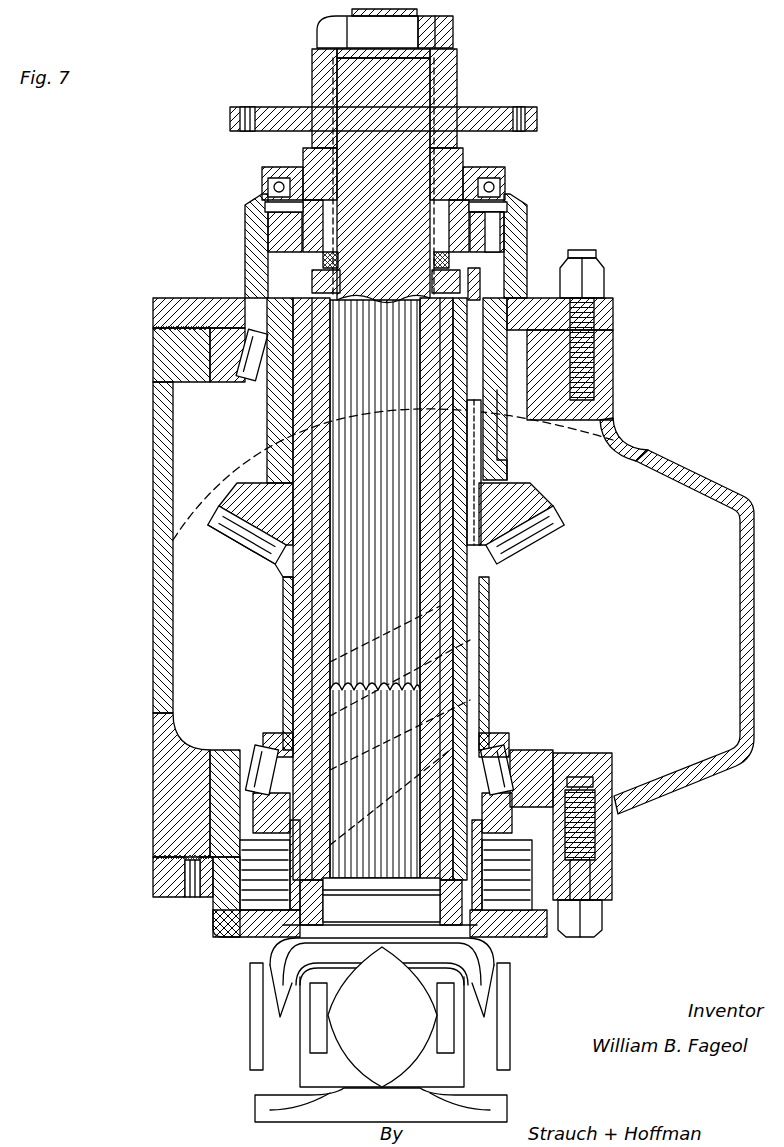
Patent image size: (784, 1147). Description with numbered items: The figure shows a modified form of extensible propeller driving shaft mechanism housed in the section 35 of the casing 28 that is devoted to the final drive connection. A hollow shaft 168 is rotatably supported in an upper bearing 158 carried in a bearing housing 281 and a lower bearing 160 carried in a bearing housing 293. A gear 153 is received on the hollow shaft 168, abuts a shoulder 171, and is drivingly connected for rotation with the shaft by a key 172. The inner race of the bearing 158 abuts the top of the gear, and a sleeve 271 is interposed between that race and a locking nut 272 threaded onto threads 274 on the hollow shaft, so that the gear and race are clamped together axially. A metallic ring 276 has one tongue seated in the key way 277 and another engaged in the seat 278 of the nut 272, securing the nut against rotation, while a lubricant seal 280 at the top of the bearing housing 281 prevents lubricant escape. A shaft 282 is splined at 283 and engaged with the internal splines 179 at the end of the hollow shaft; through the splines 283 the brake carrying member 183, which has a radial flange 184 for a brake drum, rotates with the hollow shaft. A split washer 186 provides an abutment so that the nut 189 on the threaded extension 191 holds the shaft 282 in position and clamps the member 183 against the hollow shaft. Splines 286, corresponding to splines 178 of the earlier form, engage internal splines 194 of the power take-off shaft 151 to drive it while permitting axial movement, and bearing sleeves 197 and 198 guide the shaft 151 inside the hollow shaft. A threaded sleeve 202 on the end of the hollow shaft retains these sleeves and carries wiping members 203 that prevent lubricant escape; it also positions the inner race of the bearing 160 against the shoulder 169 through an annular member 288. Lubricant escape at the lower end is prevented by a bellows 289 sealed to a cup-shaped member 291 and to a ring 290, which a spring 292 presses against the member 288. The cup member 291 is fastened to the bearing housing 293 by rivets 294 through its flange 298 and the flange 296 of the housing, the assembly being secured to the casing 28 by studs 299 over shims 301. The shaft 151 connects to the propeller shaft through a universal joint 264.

The threaded extension 191 is at (417, 12).
The nut 189 is at (328, 30).
The brake carrying member 183 is at (318, 85).
The splines 178 is at (433, 88).
The radial flange 184 is at (535, 113).
The internal splines 179 is at (305, 152).
The lubricant seal 280 is at (500, 170).
The locking nut 272 is at (505, 207).
The seat 278 is at (495, 220).
The threads 274 is at (283, 225).
The splines 283 is at (333, 240).
The sleeve 271 is at (490, 262).
The key way 277 is at (482, 282).
The metallic ring 276 is at (330, 258).
The split washer 186 is at (322, 264).
The bearing housing 281 is at (572, 317).
The bearing 158 is at (255, 383).
The key 172 is at (483, 420).
The shaft 151 is at (497, 460).
The section 35 is at (636, 470).
The casing 28 is at (728, 473).
The gear 153 is at (532, 497).
The shaft 282 is at (500, 562).
The shoulder 171 is at (280, 555).
The hollow shaft 168 is at (456, 628).
The internal splines 194 is at (330, 645).
The bearing sleeve 198 is at (463, 660).
The bearing sleeve 197 is at (480, 707).
The splines 286 is at (343, 718).
The shoulder 169 is at (490, 738).
The bearing 160 is at (518, 748).
The annular member 288 is at (580, 790).
The bearing housing 293 is at (612, 832).
The bellows 289 is at (540, 867).
The studs 299 is at (603, 918).
The ring 290 is at (262, 845).
The shims 301 is at (213, 860).
The flange 296 is at (165, 877).
The flange 298 is at (200, 893).
The rivets 294 is at (190, 895).
The spring 292 is at (245, 912).
The cup-shaped member 291 is at (222, 933).
The threaded sleeve 202 is at (274, 933).
The wiping members 203 is at (327, 895).
The universal joint 264 is at (428, 1105).